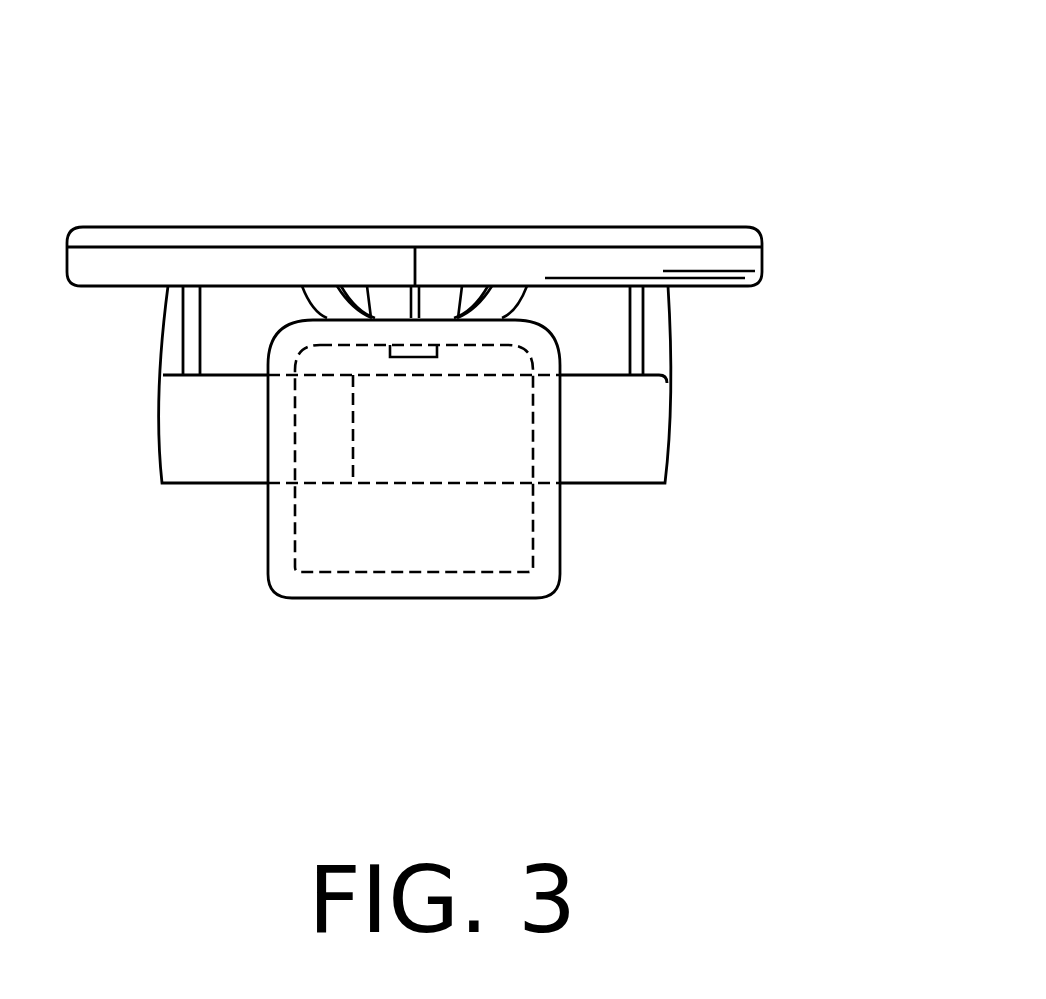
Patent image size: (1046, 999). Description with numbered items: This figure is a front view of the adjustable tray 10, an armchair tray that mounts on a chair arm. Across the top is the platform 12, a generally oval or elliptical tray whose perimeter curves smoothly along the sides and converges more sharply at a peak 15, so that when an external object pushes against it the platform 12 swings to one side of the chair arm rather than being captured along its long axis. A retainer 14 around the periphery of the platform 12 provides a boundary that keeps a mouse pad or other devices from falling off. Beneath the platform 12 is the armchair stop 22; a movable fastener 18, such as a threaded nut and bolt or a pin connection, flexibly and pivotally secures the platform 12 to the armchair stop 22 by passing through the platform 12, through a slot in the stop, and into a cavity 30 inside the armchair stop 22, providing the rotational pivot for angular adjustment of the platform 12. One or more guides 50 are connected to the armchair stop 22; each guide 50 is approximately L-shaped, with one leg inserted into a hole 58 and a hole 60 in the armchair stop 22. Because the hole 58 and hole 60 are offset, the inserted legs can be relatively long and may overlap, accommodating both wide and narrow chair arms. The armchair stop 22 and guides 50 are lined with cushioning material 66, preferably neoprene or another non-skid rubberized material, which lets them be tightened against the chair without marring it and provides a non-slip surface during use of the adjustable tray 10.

The adjustable tray 10 is at (553, 62).
The platform 12 is at (762, 268).
The retainer 14 is at (160, 240).
The peak 15 is at (413, 275).
The movable fastener 18 is at (415, 357).
The armchair stop 22 is at (560, 533).
The cavity 30 is at (400, 552).
The guide 50 is at (193, 432).
The hole 58 is at (290, 485).
The hole 60 is at (543, 486).
The cushioning material 66 is at (193, 330).